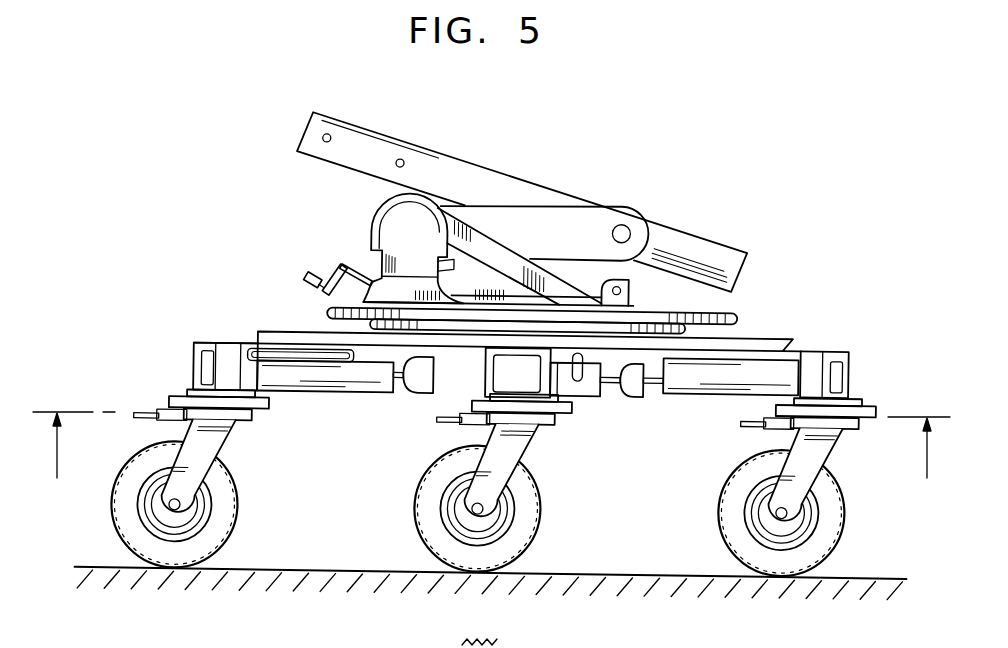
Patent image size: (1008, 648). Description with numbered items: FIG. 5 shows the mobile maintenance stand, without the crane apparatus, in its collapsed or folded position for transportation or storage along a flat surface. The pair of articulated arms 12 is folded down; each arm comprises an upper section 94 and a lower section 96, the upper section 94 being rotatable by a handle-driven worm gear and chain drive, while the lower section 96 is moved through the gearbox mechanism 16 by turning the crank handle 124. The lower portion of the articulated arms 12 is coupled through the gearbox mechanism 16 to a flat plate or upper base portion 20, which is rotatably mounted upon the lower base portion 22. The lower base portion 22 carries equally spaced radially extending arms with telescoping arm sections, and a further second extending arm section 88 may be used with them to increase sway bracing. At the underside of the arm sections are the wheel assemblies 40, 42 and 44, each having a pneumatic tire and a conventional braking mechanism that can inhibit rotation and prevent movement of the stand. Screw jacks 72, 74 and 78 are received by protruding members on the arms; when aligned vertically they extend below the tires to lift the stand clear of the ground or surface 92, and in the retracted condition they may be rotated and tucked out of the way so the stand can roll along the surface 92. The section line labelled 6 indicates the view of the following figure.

The articulated arms 12 is at (552, 185).
The gearbox mechanism 16 is at (380, 208).
The upper base portion 20 is at (727, 313).
The lower base portion 22 is at (773, 342).
The wheel assembly 40 is at (553, 518).
The wheel assembly 42 is at (857, 531).
The wheel assembly 44 is at (246, 507).
The screw jack 72 is at (590, 393).
The screw jack 74 is at (724, 385).
The screw jack 78 is at (350, 380).
The ground or surface 92 is at (720, 582).
The upper section 94 is at (443, 165).
The lower section 96 is at (588, 227).
The crank handle 124 is at (325, 270).
The section line 6- 6 is at (491, 462).
The second extending arm section 88 is at (497, 644).